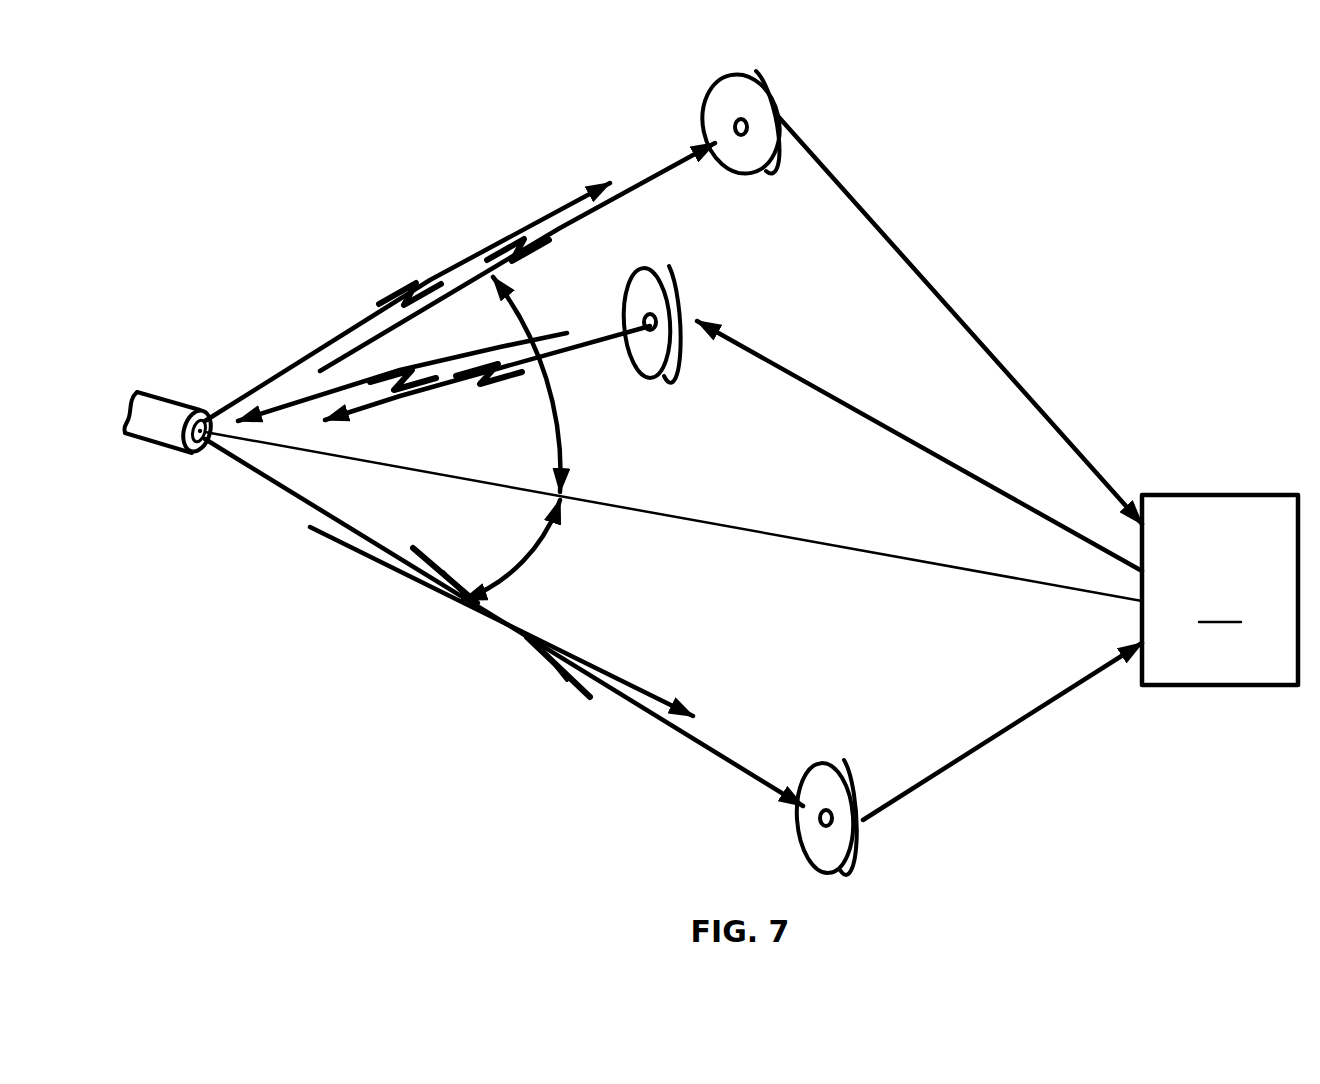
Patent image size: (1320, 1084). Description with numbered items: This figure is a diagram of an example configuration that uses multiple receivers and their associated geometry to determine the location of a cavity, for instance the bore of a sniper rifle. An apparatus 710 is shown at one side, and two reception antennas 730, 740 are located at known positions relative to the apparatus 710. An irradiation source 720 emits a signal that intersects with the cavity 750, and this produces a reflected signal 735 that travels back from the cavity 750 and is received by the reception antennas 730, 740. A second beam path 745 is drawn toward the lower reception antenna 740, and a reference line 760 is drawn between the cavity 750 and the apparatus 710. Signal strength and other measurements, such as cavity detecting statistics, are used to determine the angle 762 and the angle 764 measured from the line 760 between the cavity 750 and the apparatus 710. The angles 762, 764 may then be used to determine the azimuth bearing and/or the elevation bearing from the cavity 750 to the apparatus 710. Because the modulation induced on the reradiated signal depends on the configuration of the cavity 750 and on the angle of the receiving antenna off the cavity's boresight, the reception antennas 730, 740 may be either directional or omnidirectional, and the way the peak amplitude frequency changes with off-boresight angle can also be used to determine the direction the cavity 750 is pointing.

The apparatus 710 is at (1220, 590).
The irradiation source 720 is at (683, 303).
The reception antenna 730 is at (785, 108).
The reception antenna 740 is at (862, 833).
The cavity 750 is at (200, 415).
The reflected signal 735 is at (468, 268).
The second light beam path 745 is at (540, 670).
The reference line / axis 760 is at (812, 547).
The angle 762 is at (565, 447).
The angle 764 is at (525, 572).